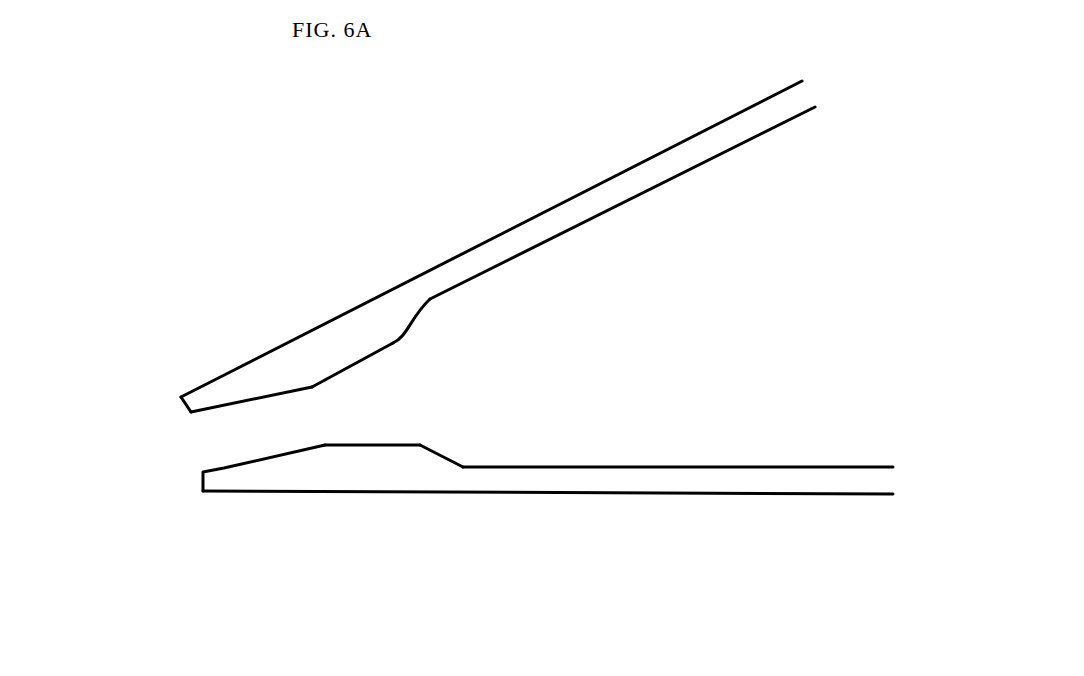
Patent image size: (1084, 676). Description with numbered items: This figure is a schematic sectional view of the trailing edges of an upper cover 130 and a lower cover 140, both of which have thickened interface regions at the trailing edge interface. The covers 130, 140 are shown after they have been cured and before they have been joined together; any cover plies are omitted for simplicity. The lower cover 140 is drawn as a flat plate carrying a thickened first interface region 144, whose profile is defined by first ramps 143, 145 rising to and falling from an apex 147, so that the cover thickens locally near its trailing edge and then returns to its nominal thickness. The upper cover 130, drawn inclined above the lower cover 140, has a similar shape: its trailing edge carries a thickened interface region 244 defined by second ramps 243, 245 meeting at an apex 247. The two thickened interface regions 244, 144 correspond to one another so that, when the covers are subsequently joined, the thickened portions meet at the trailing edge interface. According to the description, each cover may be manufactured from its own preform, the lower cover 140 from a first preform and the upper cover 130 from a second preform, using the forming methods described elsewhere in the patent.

The upper cover 130 is at (548, 225).
The lower cover 140 is at (572, 480).
The first ramp 143 is at (225, 470).
The thickened first interface region 144 is at (338, 470).
The first ramp 145 is at (441, 457).
The apex 147 is at (357, 445).
The second ramp 243 is at (250, 402).
The thickened interface region 244 is at (308, 362).
The second ramp 245 is at (403, 330).
The apex 247 is at (370, 353).